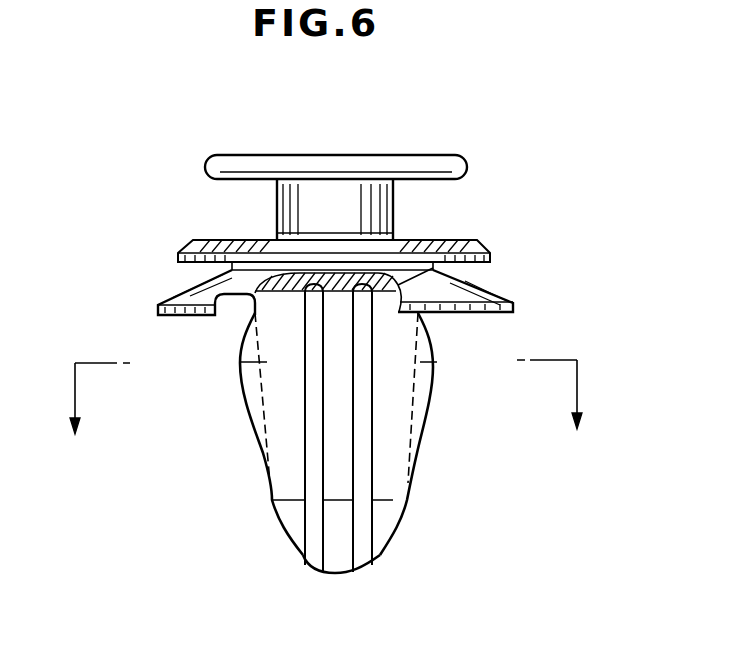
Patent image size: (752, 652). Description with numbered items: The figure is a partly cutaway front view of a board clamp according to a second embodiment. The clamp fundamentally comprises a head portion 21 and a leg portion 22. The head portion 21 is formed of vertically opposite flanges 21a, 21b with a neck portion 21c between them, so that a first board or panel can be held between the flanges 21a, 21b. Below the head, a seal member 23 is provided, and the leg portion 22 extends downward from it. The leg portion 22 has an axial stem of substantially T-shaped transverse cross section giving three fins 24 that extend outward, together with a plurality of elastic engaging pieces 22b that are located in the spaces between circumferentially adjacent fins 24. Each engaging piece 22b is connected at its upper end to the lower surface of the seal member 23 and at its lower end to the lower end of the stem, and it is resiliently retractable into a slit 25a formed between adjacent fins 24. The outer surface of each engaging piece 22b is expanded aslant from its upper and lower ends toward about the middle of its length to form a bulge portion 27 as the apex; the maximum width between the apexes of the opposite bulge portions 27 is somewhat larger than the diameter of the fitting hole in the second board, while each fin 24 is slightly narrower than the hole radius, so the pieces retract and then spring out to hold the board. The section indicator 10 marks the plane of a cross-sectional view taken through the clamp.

The section line 10 is at (328, 404).
The head portion 21 is at (578, 146).
The flange 21a is at (478, 243).
The flange 21b is at (460, 166).
The neck portion 21c is at (392, 211).
The leg portion 22 is at (340, 442).
The elastic engaging pieces 22b is at (285, 453).
The seal member 23 is at (178, 300).
The fins 24 is at (253, 365).
The slit 25a is at (315, 523).
The bulge portion 27 is at (430, 407).